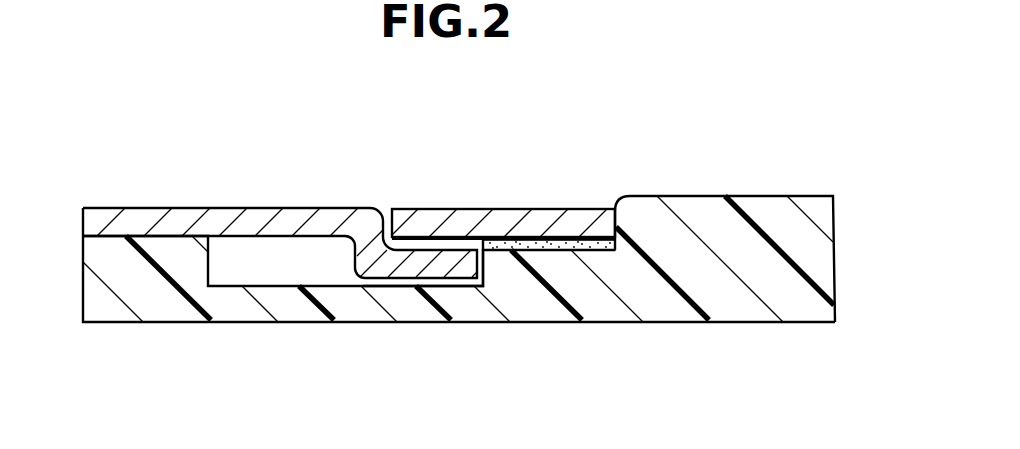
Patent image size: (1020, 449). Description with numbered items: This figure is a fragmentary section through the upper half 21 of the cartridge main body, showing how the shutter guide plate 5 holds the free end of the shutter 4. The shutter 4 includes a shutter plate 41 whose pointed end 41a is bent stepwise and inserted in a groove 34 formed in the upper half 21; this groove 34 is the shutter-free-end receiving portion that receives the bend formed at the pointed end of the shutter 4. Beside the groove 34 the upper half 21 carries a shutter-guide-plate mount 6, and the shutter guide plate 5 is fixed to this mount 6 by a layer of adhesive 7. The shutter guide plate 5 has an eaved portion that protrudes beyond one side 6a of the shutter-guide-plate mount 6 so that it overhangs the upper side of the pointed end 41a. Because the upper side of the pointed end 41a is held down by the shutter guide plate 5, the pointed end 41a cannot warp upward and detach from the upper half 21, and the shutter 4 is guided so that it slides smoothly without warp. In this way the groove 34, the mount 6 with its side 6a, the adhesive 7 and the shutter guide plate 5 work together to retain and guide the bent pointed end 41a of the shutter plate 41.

The shutter 4 is at (108, 208).
The upper half 21 is at (697, 196).
The shutter plate 41 is at (257, 218).
The pointed end 41a is at (437, 258).
The shutter guide plate 5 is at (473, 212).
The shutter-guide-plate mount 6 is at (518, 238).
The one side of the shutter-guide-plate mount 6a is at (476, 260).
The adhesive 7 is at (563, 242).
The groove 34 is at (410, 280).